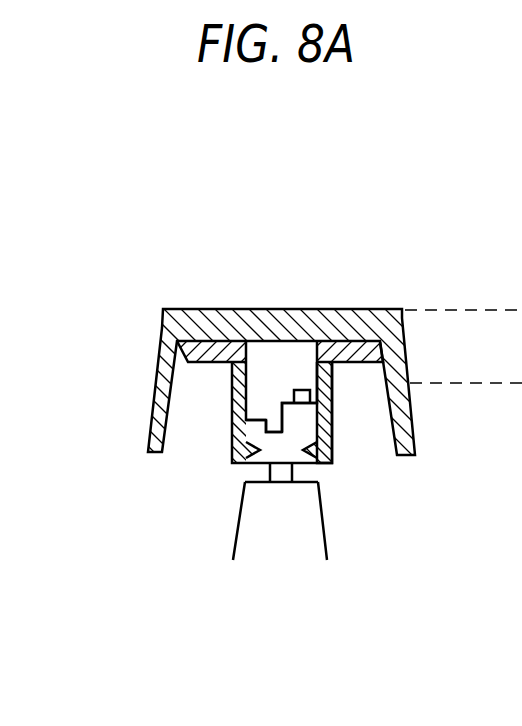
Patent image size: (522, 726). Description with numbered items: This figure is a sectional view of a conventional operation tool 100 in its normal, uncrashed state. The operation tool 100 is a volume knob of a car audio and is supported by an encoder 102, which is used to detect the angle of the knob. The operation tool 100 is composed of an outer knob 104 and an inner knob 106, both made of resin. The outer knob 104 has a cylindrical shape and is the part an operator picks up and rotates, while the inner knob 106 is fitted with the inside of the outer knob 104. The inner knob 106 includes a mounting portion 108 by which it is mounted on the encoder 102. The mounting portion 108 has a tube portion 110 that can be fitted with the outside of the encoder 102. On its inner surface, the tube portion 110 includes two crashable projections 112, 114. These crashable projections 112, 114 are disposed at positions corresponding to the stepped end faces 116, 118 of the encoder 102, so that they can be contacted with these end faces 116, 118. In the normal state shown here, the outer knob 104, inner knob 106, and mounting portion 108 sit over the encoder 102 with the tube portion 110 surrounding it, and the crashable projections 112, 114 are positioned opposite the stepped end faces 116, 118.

The operation tool 100 is at (135, 238).
The encoder 102 is at (234, 578).
The outer knob 104 is at (147, 382).
The inner knob 106 is at (205, 432).
The mounting portion 108 is at (225, 470).
The tube portion 110 is at (333, 416).
The crashable projection 112 is at (261, 418).
The crashable projection 114 is at (305, 390).
The stepped end face 116 is at (272, 430).
The stepped end face 118 is at (283, 402).